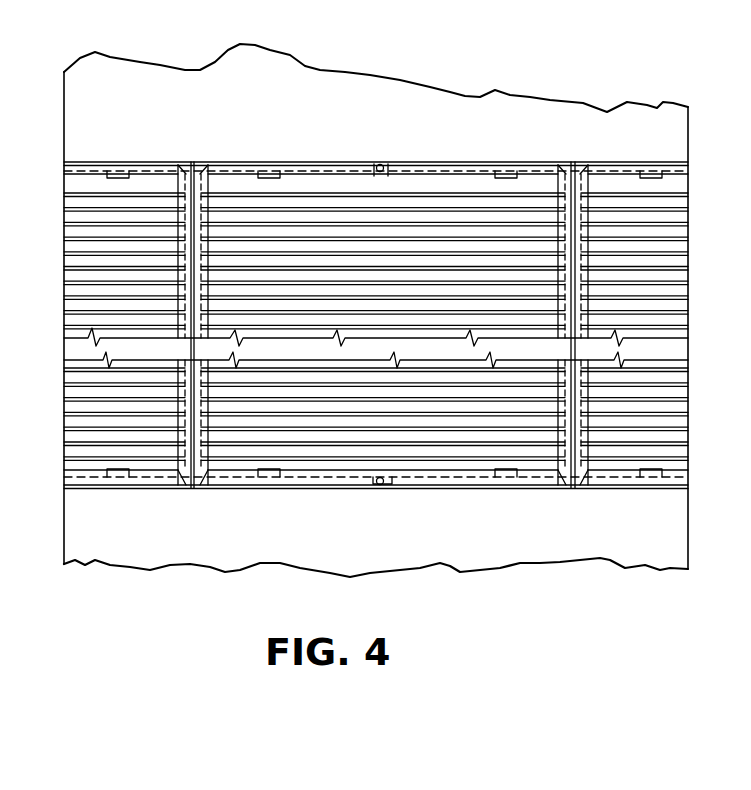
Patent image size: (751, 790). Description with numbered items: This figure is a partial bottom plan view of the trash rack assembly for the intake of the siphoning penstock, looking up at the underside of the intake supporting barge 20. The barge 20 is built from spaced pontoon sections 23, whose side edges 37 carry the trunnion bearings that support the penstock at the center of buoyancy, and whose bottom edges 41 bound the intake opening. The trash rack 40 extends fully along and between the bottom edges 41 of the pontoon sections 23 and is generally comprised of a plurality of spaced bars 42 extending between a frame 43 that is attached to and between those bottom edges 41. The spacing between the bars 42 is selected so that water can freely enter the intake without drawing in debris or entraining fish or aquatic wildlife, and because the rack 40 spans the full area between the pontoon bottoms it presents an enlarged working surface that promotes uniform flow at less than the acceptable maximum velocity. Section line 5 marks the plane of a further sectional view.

The barge 20 is at (538, 82).
The pontoon sections 23 is at (236, 107).
The side edges 37 is at (405, 163).
The trash rack 40 is at (690, 258).
The bottom edges 41 is at (657, 113).
The spaced bars 42 is at (160, 193).
The frame 43 is at (598, 165).
The section line 5- 5 is at (413, 423).